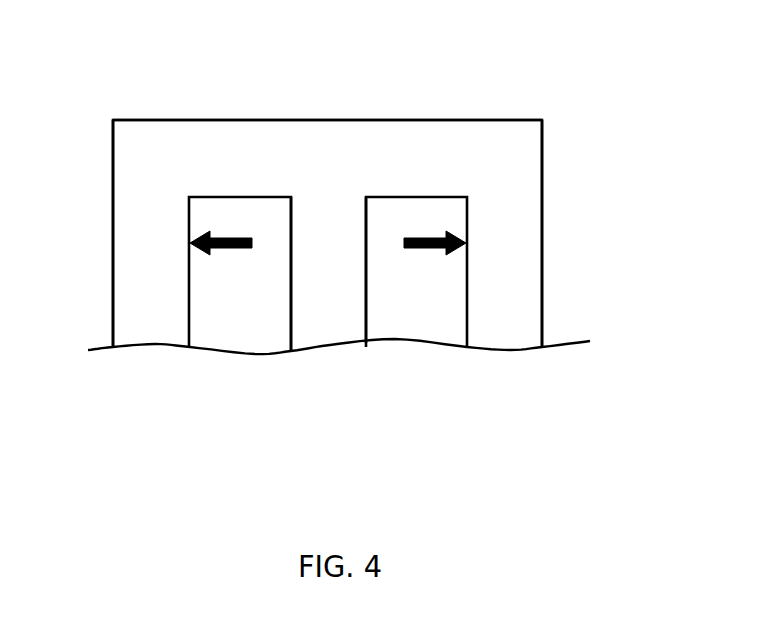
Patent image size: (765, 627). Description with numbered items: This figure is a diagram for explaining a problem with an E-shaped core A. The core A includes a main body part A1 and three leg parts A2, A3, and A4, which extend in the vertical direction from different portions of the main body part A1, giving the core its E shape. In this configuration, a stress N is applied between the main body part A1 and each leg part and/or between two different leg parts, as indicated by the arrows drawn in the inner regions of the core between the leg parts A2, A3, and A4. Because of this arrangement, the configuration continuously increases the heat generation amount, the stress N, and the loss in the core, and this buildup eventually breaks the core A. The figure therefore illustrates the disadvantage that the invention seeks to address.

The E-shaped core A is at (598, 66).
The main body part A1 is at (317, 131).
The leg part A2 is at (132, 292).
The leg part A3 is at (333, 301).
The leg part A4 is at (512, 259).
The stress N is at (229, 237).